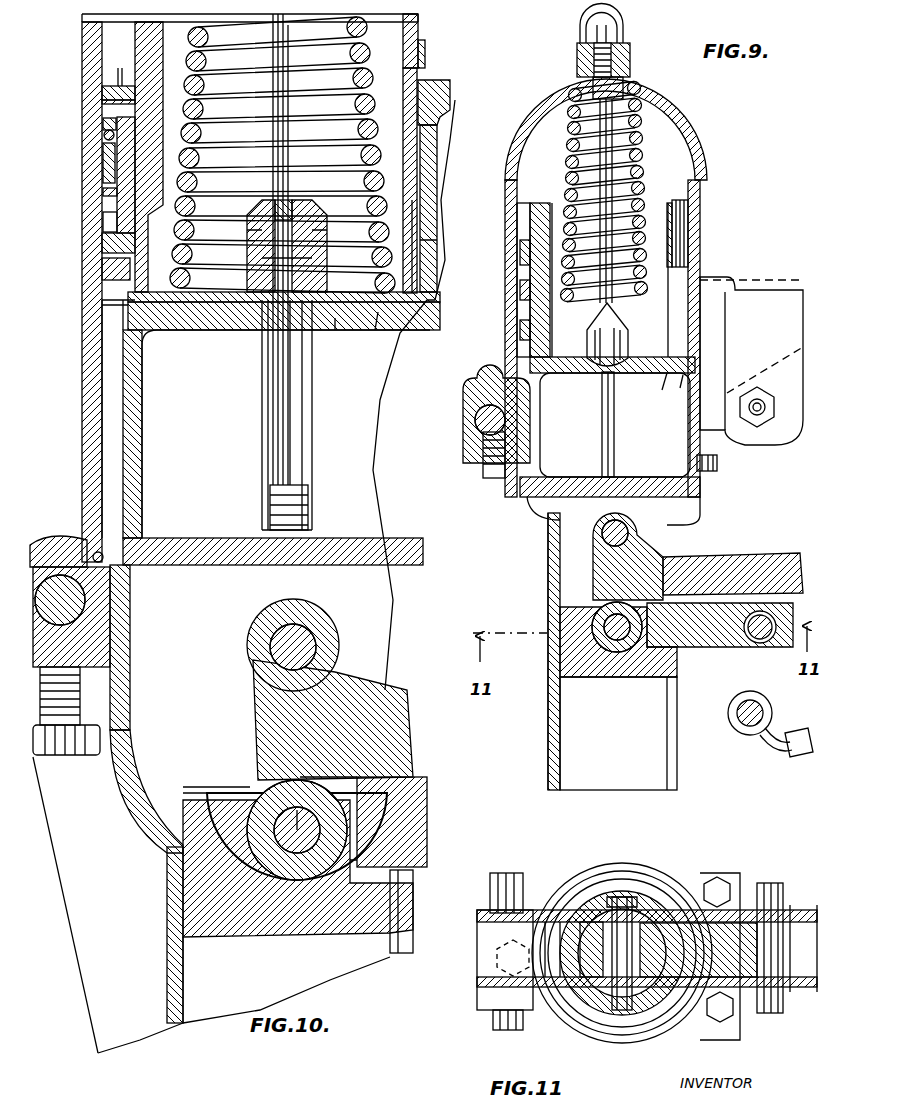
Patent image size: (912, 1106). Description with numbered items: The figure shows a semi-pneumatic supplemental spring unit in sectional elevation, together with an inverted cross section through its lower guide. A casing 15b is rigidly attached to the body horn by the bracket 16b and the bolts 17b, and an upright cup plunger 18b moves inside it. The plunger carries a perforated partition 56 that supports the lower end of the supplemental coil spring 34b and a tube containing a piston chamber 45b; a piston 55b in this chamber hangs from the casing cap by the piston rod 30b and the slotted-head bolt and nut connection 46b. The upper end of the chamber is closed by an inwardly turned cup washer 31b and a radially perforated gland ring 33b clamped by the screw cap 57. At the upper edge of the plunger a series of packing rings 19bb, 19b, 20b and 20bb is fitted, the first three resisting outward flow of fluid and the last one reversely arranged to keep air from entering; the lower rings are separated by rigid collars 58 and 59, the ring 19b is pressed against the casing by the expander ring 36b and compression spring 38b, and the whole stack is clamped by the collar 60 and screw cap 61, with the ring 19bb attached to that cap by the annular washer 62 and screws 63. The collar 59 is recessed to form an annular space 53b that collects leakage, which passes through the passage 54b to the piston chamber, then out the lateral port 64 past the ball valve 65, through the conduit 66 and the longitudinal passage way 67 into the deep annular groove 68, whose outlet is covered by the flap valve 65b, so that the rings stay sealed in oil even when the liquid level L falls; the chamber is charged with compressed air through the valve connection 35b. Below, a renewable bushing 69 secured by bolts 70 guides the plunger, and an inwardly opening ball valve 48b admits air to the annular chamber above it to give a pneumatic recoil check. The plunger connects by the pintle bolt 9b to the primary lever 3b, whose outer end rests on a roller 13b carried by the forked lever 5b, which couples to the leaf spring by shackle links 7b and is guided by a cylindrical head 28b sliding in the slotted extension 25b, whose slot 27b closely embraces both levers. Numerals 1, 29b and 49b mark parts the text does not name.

In FIG. 9, the line 1 is at (785, 750).
In FIG. 10, the primary lever 3b is at (285, 705).
In FIG. 9, the primary lever 3b is at (766, 557).
In FIG. 10, the lever 5b is at (427, 803).
In FIG. 9, the lever 5b is at (700, 647).
In FIG. 11, the lever 5b is at (805, 908).
In FIG. 9, the shackle links 7b is at (770, 695).
In FIG. 11, the shackle links 7b is at (767, 883).
In FIG. 10, the pintle bolt 9b is at (272, 648).
In FIG. 9, the pintle bolt 9b is at (628, 535).
In FIG. 10, the roller 13b is at (265, 800).
In FIG. 9, the roller 13b is at (620, 640).
In FIG. 11, the roller 13b is at (585, 920).
In FIG. 10, the casing 15b is at (90, 427).
In FIG. 9, the casing 15b is at (562, 80).
In FIG. 9, the bracket 16b is at (751, 357).
In FIG. 9, the bolts 17b is at (760, 420).
In FIG. 10, the cup plunger 18b is at (437, 127).
In FIG. 9, the cup plunger 18b is at (527, 492).
In FIG. 10, the packing ring 19b is at (118, 180).
In FIG. 9, the packing ring 19b is at (520, 300).
In FIG. 10, the packing ring 19bb is at (102, 92).
In FIG. 9, the packing ring 19bb is at (520, 262).
In FIG. 10, the packing ring 20b is at (102, 248).
In FIG. 9, the packing ring 20b is at (530, 340).
In FIG. 10, the packing ring 20bb is at (102, 300).
In FIG. 10, the slotted extension 25b is at (170, 980).
In FIG. 9, the slotted extension 25b is at (548, 553).
In FIG. 10, the slot 27b is at (402, 953).
In FIG. 9, the slot 27b is at (670, 758).
In FIG. 11, the slot 27b is at (672, 1012).
In FIG. 10, the cylindrical head 28b is at (190, 885).
In FIG. 9, the cylindrical head 28b is at (548, 700).
In FIG. 11, the cylindrical head 28b is at (617, 1010).
In FIG. 10, the screw 29b is at (292, 850).
In FIG. 11, the screw 29b is at (618, 895).
In FIG. 10, the piston rod 30b is at (273, 440).
In FIG. 9, the piston rod 30b is at (620, 138).
In FIG. 10, the cup washer 31b is at (252, 318).
In FIG. 10, the gland ring 33b is at (380, 210).
In FIG. 10, the supplemental coil spring 34b is at (368, 27).
In FIG. 9, the supplemental coil spring 34b is at (645, 103).
In FIG. 9, the valve connection 35b is at (612, 32).
In FIG. 10, the expander ring 36b is at (103, 163).
In FIG. 10, the compression spring 38b is at (104, 135).
In FIG. 10, the piston chamber 45b is at (300, 462).
In FIG. 9, the slotted-head bolt and nut connection 46b is at (628, 65).
In FIG. 10, the ball valve 48b is at (85, 548).
In FIG. 9, the nut 49b is at (615, 52).
In FIG. 10, the annular space 53b is at (103, 226).
In FIG. 10, the passage 54b is at (172, 320).
In FIG. 9, the passage 54b is at (565, 373).
In FIG. 10, the piston 55b is at (305, 500).
In FIG. 10, the perforated partition 56 is at (380, 335).
In FIG. 9, the perforated partition 56 is at (672, 388).
In FIG. 10, the screw cap 57 is at (400, 198).
In FIG. 9, the screw cap 57 is at (602, 440).
In FIG. 10, the rigid collar 58 is at (102, 272).
In FIG. 10, the rigid collar 59 is at (103, 203).
In FIG. 10, the collar 60 is at (103, 122).
In FIG. 10, the screw cap 61 is at (100, 32).
In FIG. 9, the screw cap 61 is at (700, 208).
In FIG. 10, the annular washer 62 is at (102, 93).
In FIG. 10, the screws 63 is at (120, 68).
In FIG. 10, the lateral port 64 is at (412, 290).
In FIG. 10, the ball valve 65 is at (430, 312).
In FIG. 10, the flap valve 65b is at (425, 60).
In FIG. 10, the conduit 66 is at (420, 262).
In FIG. 9, the conduit 66 is at (652, 390).
In FIG. 10, the longitudinal passage way 67 is at (418, 160).
In FIG. 9, the annular groove 68 is at (528, 213).
In FIG. 10, the bushing 69 is at (130, 606).
In FIG. 9, the bushing 69 is at (468, 398).
In FIG. 11, the bushing 69 is at (635, 892).
In FIG. 10, the bolts 70 is at (62, 756).
In FIG. 9, the bolts 70 is at (483, 475).
In FIG. 11, the bolts 70 is at (500, 965).